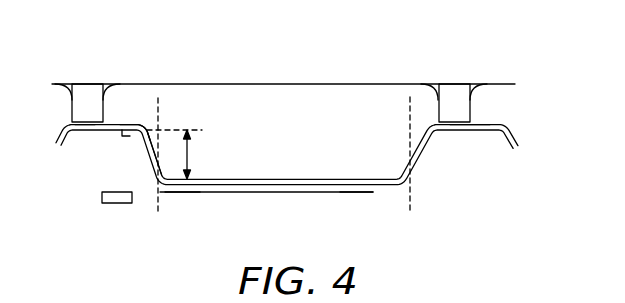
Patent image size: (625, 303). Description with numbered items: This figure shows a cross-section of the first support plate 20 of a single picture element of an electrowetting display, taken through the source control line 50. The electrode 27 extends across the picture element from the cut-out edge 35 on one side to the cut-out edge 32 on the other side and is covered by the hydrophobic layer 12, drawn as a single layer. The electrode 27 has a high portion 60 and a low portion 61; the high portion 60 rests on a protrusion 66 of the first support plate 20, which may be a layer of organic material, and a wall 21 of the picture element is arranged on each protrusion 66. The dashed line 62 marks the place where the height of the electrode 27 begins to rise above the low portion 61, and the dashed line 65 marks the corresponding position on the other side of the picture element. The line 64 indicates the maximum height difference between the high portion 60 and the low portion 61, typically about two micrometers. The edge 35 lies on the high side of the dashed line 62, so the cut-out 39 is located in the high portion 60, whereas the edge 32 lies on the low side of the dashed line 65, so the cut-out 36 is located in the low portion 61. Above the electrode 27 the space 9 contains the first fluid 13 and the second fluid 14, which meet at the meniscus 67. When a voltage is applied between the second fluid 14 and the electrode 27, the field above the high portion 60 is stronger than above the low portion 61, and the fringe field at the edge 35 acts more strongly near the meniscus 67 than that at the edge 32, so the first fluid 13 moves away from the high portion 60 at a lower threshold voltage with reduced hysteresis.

The space 9 is at (278, 46).
The hydrophobic layer 12 is at (512, 137).
The first fluid 13 is at (323, 114).
The second fluid 14 is at (323, 77).
The first support plate 20 is at (533, 239).
The wall 21 is at (88, 84).
The electrode 27 is at (290, 193).
The cut-out edge 32 is at (373, 193).
The cut-out edge 35 is at (140, 128).
The cut-out 36 is at (396, 193).
The cut-out 39 is at (108, 135).
The source control line 50 is at (115, 204).
The high portion 60 is at (140, 160).
The low portion 61 is at (185, 193).
The dashed line 62 is at (160, 108).
The line 64 is at (192, 152).
The dashed line 65 is at (410, 108).
The protrusion 66 is at (83, 153).
The meniscus 67 is at (362, 84).